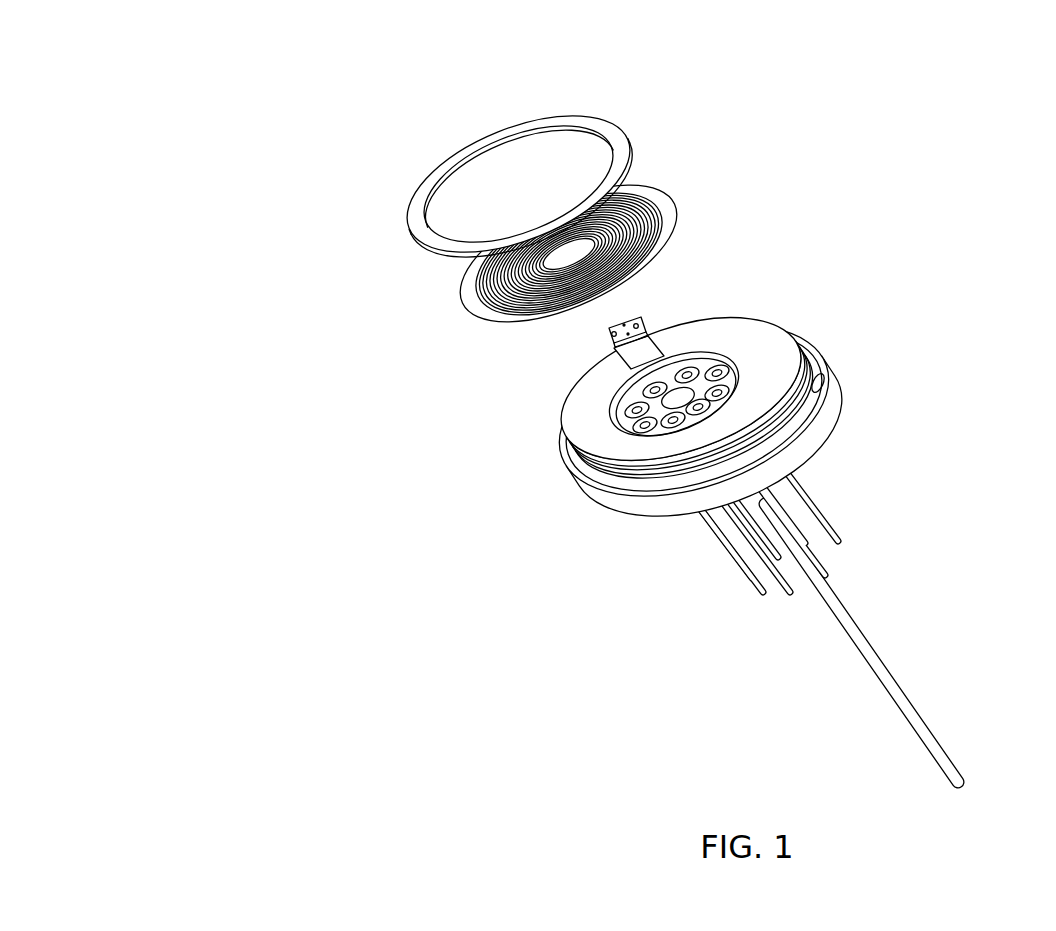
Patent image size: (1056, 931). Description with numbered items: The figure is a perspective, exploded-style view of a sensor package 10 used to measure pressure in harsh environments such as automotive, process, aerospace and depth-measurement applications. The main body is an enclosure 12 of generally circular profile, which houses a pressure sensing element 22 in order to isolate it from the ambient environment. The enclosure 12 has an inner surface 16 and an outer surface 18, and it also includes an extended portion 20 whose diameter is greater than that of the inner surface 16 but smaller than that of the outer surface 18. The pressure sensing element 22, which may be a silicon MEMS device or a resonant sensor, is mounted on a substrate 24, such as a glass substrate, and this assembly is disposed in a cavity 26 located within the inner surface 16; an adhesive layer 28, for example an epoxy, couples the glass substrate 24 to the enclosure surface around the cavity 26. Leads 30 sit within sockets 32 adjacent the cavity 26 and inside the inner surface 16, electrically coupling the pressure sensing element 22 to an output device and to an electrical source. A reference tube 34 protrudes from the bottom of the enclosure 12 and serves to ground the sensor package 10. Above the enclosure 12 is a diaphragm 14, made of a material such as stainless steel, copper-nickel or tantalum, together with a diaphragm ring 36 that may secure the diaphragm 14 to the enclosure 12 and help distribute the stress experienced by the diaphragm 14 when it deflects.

The sensor package 10 is at (313, 103).
The enclosure 12 is at (753, 536).
The diaphragm 14 is at (685, 204).
The inner surface 16 is at (740, 366).
The outer surface 18 is at (808, 407).
The extended portion 20 is at (807, 435).
The pressure sensing element 22 is at (622, 323).
The substrate 24 is at (648, 334).
The cavity 26 is at (684, 396).
The adhesive layer 28 is at (640, 366).
The leads 30 is at (745, 584).
The sockets 32 is at (612, 408).
The reference tube 34 is at (916, 700).
The diaphragm ring 36 is at (635, 139).